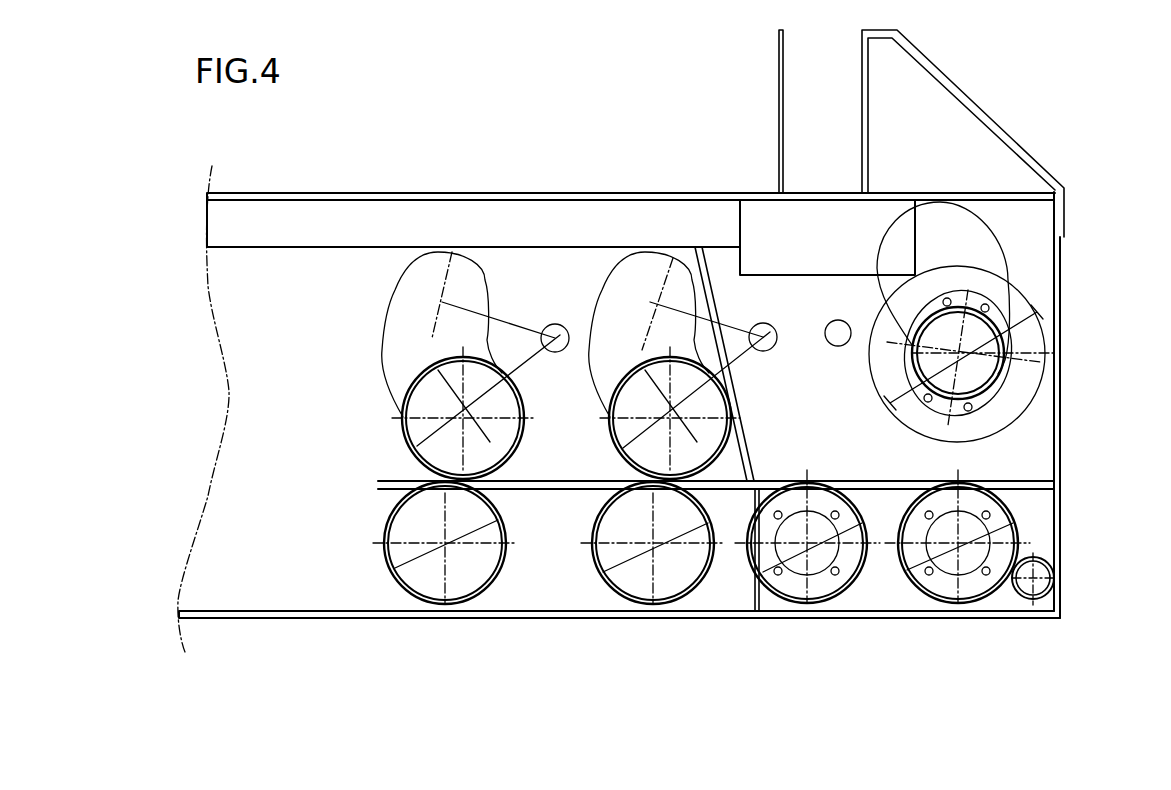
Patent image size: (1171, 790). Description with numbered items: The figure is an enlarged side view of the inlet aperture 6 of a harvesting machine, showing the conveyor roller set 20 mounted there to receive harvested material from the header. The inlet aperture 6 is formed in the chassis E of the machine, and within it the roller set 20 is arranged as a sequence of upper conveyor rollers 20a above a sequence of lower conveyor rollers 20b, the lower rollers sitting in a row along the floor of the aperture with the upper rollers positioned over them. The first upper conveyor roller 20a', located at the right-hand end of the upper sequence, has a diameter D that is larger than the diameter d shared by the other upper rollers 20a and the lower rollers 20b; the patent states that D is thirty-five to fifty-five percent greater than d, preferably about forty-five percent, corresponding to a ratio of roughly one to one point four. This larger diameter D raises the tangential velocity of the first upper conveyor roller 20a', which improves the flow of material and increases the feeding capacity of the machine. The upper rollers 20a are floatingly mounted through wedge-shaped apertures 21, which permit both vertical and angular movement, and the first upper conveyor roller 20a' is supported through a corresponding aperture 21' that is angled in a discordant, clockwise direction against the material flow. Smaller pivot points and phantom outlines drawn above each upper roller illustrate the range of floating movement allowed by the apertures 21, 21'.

The inlet aperture 6 is at (1057, 447).
The conveyor roller set 20 is at (1010, 636).
The upper conveyor roller 20a is at (533, 318).
The first upper conveyor roller 20a' is at (1019, 354).
The lower conveyor roller 20b is at (432, 587).
The aperture 21 is at (572, 256).
The aperture 21' is at (978, 229).
The diameter of the first upper conveyor roller D is at (963, 357).
The diameter of the conveyor rollers d is at (681, 494).
The chassis E is at (269, 597).